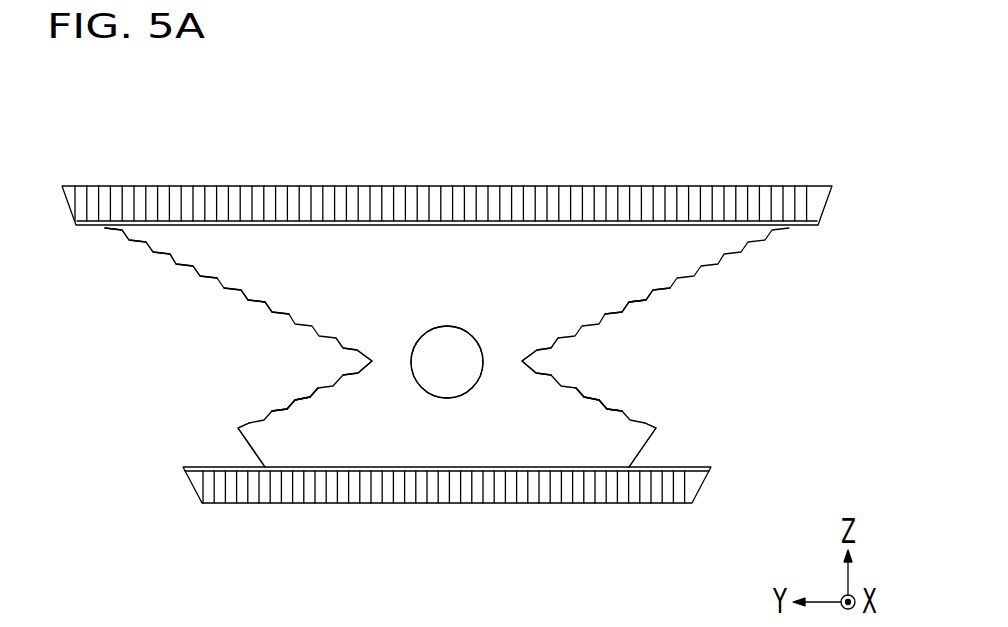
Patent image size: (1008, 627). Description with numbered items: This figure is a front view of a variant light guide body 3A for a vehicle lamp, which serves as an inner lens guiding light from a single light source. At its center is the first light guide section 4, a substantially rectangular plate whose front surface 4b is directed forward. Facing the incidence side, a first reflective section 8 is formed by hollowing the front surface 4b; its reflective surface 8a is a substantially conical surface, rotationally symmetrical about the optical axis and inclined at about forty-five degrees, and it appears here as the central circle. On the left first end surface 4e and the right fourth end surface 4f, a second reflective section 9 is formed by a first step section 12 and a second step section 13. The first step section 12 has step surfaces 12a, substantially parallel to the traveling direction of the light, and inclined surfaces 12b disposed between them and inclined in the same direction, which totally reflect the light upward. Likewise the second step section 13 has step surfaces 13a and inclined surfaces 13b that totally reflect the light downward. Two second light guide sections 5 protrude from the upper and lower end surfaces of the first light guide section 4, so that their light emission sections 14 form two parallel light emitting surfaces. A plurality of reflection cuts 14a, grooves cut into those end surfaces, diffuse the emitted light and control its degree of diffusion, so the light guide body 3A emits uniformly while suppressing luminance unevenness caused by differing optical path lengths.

The light guide body 3A is at (755, 150).
The first light guide section 4 is at (271, 252).
The front surface 4b is at (334, 283).
The first end surface 4e is at (317, 356).
The fourth end surface 4f is at (577, 355).
The second light guide section 5 is at (443, 186).
The first reflective section 8 is at (447, 362).
The reflective surface 8a is at (458, 375).
The second reflective section 9 is at (446, 389).
The first step section 12 is at (99, 353).
The step surface 12a is at (260, 312).
The inclined surface 12b is at (258, 304).
The second step section 13 is at (128, 450).
The step surface 13a is at (297, 398).
The inclined surface 13b is at (310, 388).
The light emission section 14 is at (637, 207).
The reflection cut 14a is at (527, 213).